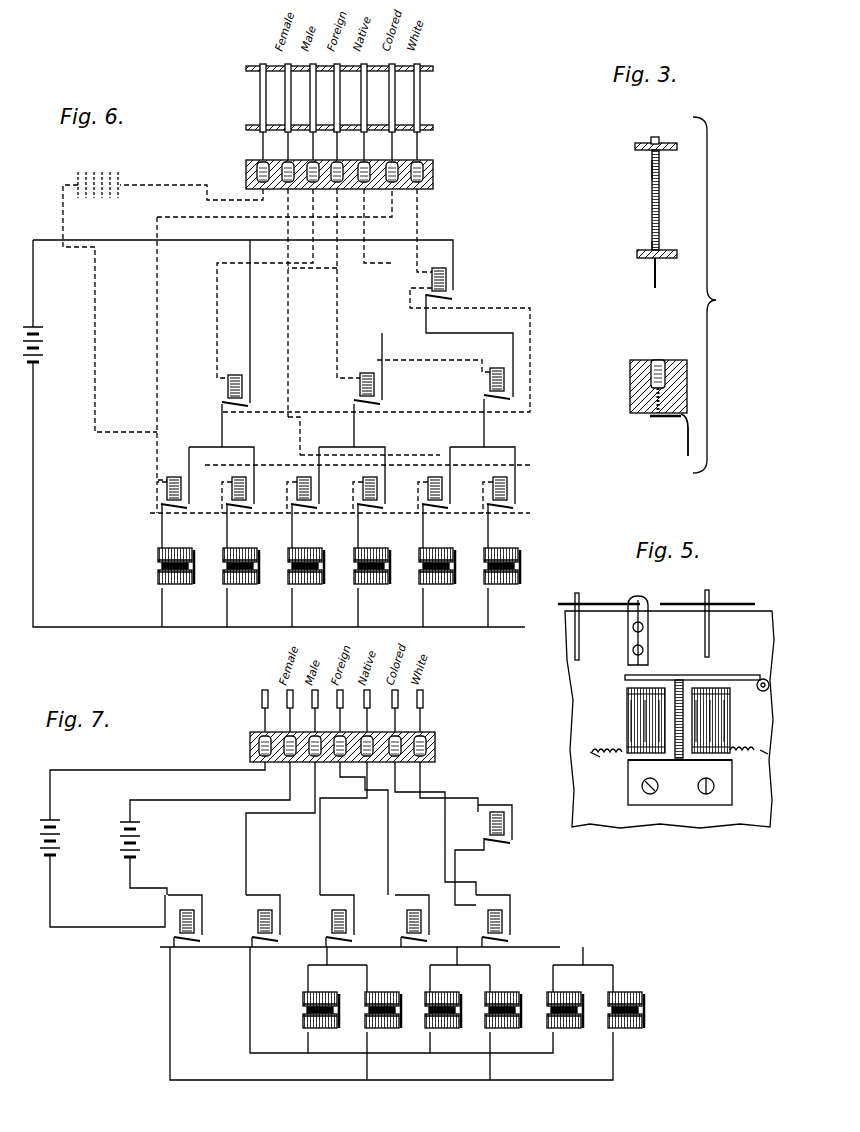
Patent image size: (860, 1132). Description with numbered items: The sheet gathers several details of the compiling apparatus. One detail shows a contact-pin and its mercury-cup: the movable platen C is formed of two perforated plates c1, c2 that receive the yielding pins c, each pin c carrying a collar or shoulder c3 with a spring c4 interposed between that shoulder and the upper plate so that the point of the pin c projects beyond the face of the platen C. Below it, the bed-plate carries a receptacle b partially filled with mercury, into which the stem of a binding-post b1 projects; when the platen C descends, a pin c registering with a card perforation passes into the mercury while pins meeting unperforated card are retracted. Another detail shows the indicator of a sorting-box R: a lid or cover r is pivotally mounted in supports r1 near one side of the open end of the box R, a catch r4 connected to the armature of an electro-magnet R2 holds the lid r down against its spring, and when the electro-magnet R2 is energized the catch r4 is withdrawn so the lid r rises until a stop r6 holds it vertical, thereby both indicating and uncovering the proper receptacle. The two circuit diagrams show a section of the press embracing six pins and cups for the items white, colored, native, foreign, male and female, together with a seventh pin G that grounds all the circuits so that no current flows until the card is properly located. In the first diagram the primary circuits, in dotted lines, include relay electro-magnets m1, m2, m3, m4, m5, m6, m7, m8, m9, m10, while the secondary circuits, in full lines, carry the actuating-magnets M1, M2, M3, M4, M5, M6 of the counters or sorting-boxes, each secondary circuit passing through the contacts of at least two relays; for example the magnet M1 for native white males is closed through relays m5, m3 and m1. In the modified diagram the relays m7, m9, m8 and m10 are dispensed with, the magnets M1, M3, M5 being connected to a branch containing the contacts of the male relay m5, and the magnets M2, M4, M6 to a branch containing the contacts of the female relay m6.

In FIG. 6, the seventh pin G is at (339, 119).
In FIG. 7, the seventh pin G is at (260, 703).
In FIG. 6, the relay electro-magnet m1 is at (439, 276).
In FIG. 7, the relay electro-magnet m1 is at (497, 820).
In FIG. 6, the relay electro-magnet m2 is at (235, 384).
In FIG. 7, the relay electro-magnet m2 is at (339, 919).
In FIG. 6, the relay electro-magnet m3 is at (497, 377).
In FIG. 7, the relay electro-magnet m3 is at (495, 919).
In FIG. 6, the relay electro-magnet m4 is at (367, 382).
In FIG. 7, the relay electro-magnet m4 is at (414, 919).
In FIG. 6, the relay electro-magnet m5 is at (500, 486).
In FIG. 7, the relay electro-magnet m5 is at (187, 919).
In FIG. 6, the relay electro-magnet m6 is at (435, 486).
In FIG. 7, the relay electro-magnet m6 is at (265, 919).
In FIG. 6, the relay electro-magnet m7 is at (370, 486).
In FIG. 6, the relay electro-magnet m8 is at (304, 486).
In FIG. 6, the relay electro-magnet m9 is at (239, 486).
In FIG. 6, the relay electro-magnet m10 is at (174, 486).
In FIG. 6, the actuating-magnet M1 is at (502, 578).
In FIG. 7, the actuating-magnet M1 is at (626, 1001).
In FIG. 6, the actuating-magnet M2 is at (437, 578).
In FIG. 7, the actuating-magnet M2 is at (565, 1001).
In FIG. 6, the actuating-magnet M3 is at (372, 578).
In FIG. 7, the actuating-magnet M3 is at (503, 1001).
In FIG. 6, the actuating-magnet M4 is at (306, 578).
In FIG. 7, the actuating-magnet M4 is at (443, 1001).
In FIG. 6, the actuating-magnet M5 is at (241, 578).
In FIG. 7, the actuating-magnet M5 is at (383, 1001).
In FIG. 6, the actuating-magnet M6 is at (176, 578).
In FIG. 7, the actuating-magnet M6 is at (321, 1001).
In FIG. 3, the movable platen C is at (643, 200).
In FIG. 3, the yielding pin c is at (658, 275).
In FIG. 3, the upper plate of platen c1 is at (678, 149).
In FIG. 3, the lower plate of platen c2 is at (670, 250).
In FIG. 3, the collar or shoulder c3 is at (652, 246).
In FIG. 3, the spring c4 is at (652, 168).
In FIG. 3, the receptacle b is at (658, 360).
In FIG. 3, the binding-post stem b1 is at (658, 420).
In FIG. 5, the sorting-box R is at (669, 719).
In FIG. 5, the electro-magnet R2 is at (732, 722).
In FIG. 5, the lid or cover r is at (656, 597).
In FIG. 5, the supports r1 is at (650, 640).
In FIG. 5, the catch r4 is at (630, 676).
In FIG. 5, the stop r6 is at (580, 625).